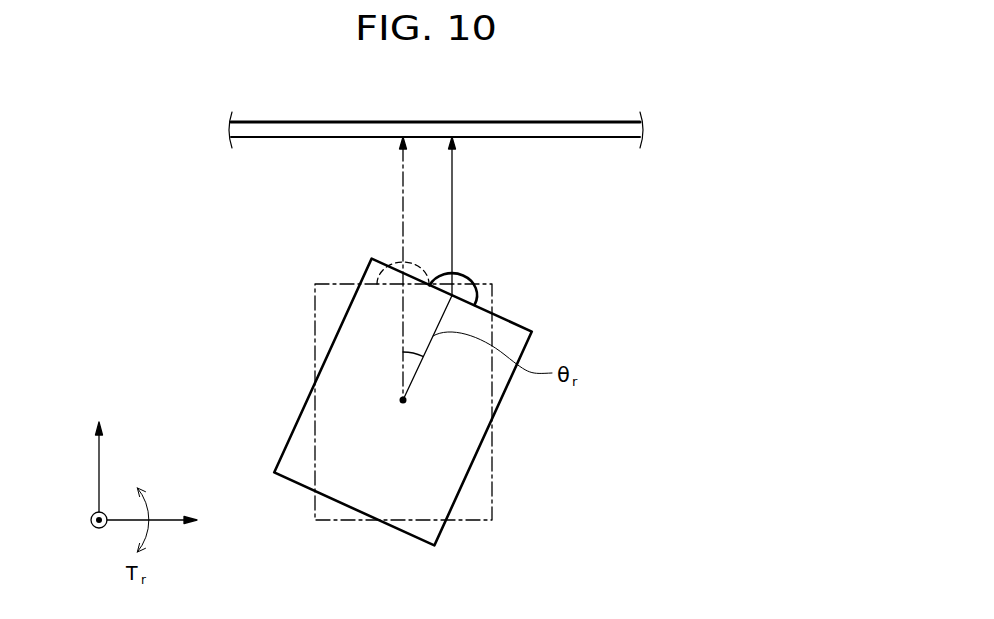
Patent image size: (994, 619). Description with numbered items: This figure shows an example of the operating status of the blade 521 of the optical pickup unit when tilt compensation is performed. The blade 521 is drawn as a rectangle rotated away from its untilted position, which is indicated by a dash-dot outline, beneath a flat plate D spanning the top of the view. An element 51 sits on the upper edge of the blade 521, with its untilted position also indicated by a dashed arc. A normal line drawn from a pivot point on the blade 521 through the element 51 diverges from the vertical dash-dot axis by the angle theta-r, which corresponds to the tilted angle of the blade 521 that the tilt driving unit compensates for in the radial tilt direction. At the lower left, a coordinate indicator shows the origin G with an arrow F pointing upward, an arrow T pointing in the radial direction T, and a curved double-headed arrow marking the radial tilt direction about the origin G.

The sensing portion / protrusion 51 is at (465, 290).
The blade 521 is at (450, 453).
The display / reference plate D is at (554, 122).
The center of gravity G is at (89, 530).
The force direction F is at (97, 453).
The radial direction T is at (161, 523).